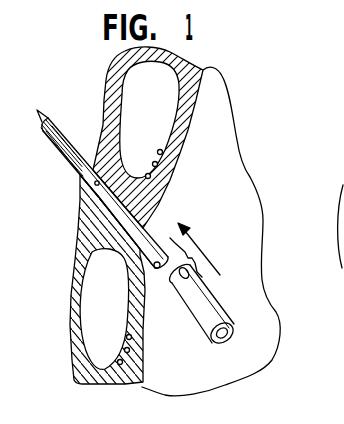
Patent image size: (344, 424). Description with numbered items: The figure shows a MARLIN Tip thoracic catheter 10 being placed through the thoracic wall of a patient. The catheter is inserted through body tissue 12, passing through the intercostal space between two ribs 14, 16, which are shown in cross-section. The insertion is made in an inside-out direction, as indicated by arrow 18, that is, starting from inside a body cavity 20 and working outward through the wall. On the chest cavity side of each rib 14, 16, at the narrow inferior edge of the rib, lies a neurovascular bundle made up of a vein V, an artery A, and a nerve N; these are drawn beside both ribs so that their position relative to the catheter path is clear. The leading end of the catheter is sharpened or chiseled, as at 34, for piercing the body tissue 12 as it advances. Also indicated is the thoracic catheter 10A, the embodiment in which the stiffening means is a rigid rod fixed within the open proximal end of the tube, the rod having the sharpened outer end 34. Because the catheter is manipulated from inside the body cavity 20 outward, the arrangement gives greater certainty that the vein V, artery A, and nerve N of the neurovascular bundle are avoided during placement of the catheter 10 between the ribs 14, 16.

The MARLIN Tip thoracic catheter 10 is at (212, 288).
The MARLIN Tip thoracic catheter 10A is at (343, 417).
The body tissue 12 is at (90, 227).
The rib 14 is at (140, 98).
The rib 16 is at (102, 298).
The arrow 18 is at (203, 252).
The body cavity 20 is at (230, 190).
The sharpened or chiseled outer end of rod 34 is at (38, 115).
The vein V is at (162, 150).
The artery A is at (157, 163).
The nerve N is at (150, 177).